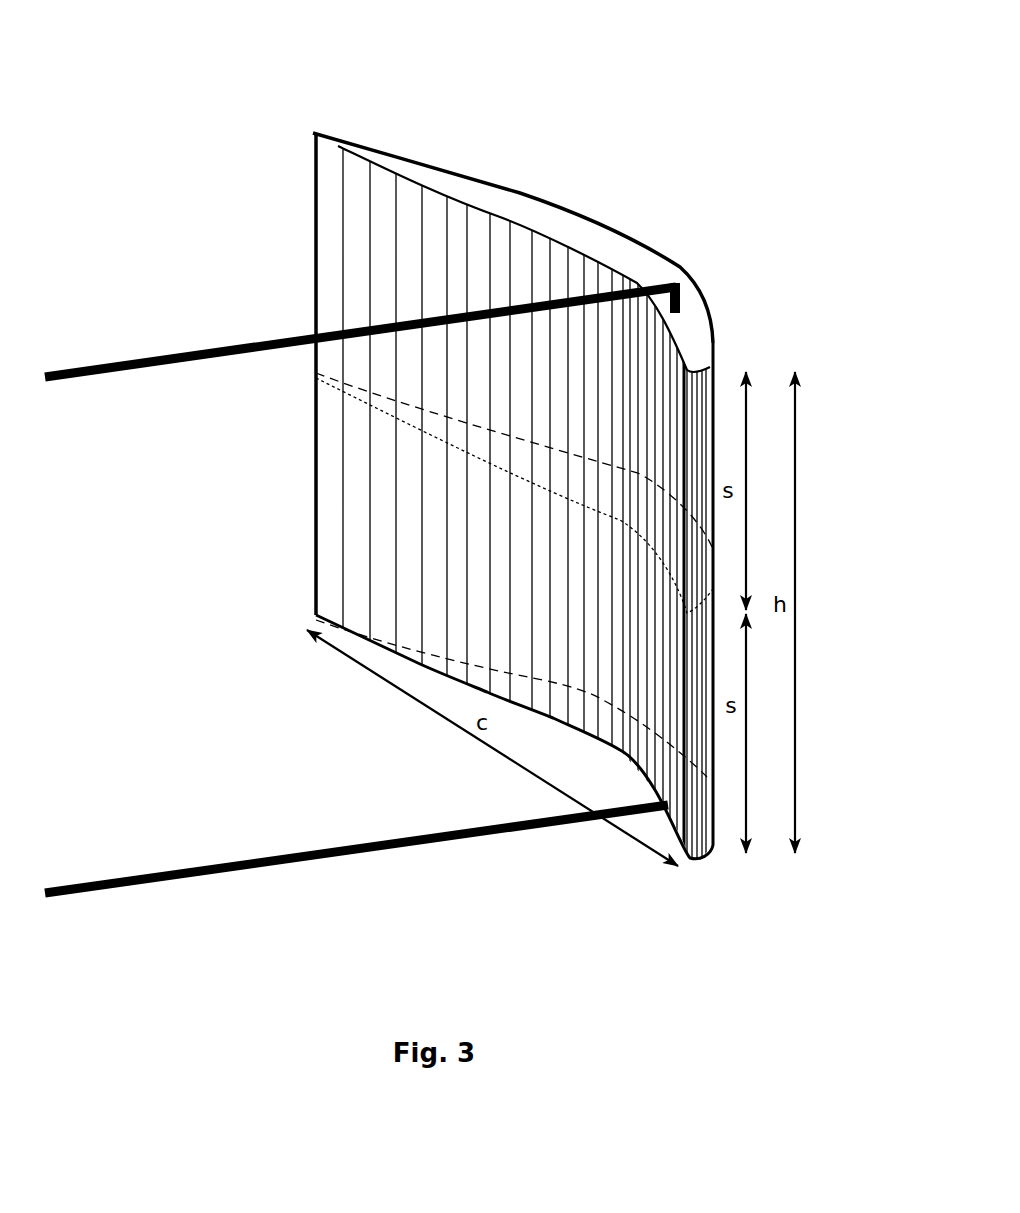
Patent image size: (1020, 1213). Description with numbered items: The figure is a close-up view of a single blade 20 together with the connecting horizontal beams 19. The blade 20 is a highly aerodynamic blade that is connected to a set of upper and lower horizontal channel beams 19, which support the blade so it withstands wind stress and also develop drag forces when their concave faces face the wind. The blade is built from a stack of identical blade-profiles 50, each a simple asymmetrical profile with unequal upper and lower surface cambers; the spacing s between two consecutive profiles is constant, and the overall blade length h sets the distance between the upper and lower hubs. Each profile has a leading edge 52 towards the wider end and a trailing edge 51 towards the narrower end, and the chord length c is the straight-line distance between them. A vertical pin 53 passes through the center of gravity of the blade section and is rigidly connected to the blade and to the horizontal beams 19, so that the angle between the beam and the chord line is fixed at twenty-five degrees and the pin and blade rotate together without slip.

The blade 20 is at (452, 519).
The horizontal beam 19 is at (185, 862).
The blade-profile 50 is at (634, 252).
The trailing edge 51 is at (307, 128).
The leading edge 52 is at (693, 865).
The vertical pin 53 is at (686, 297).